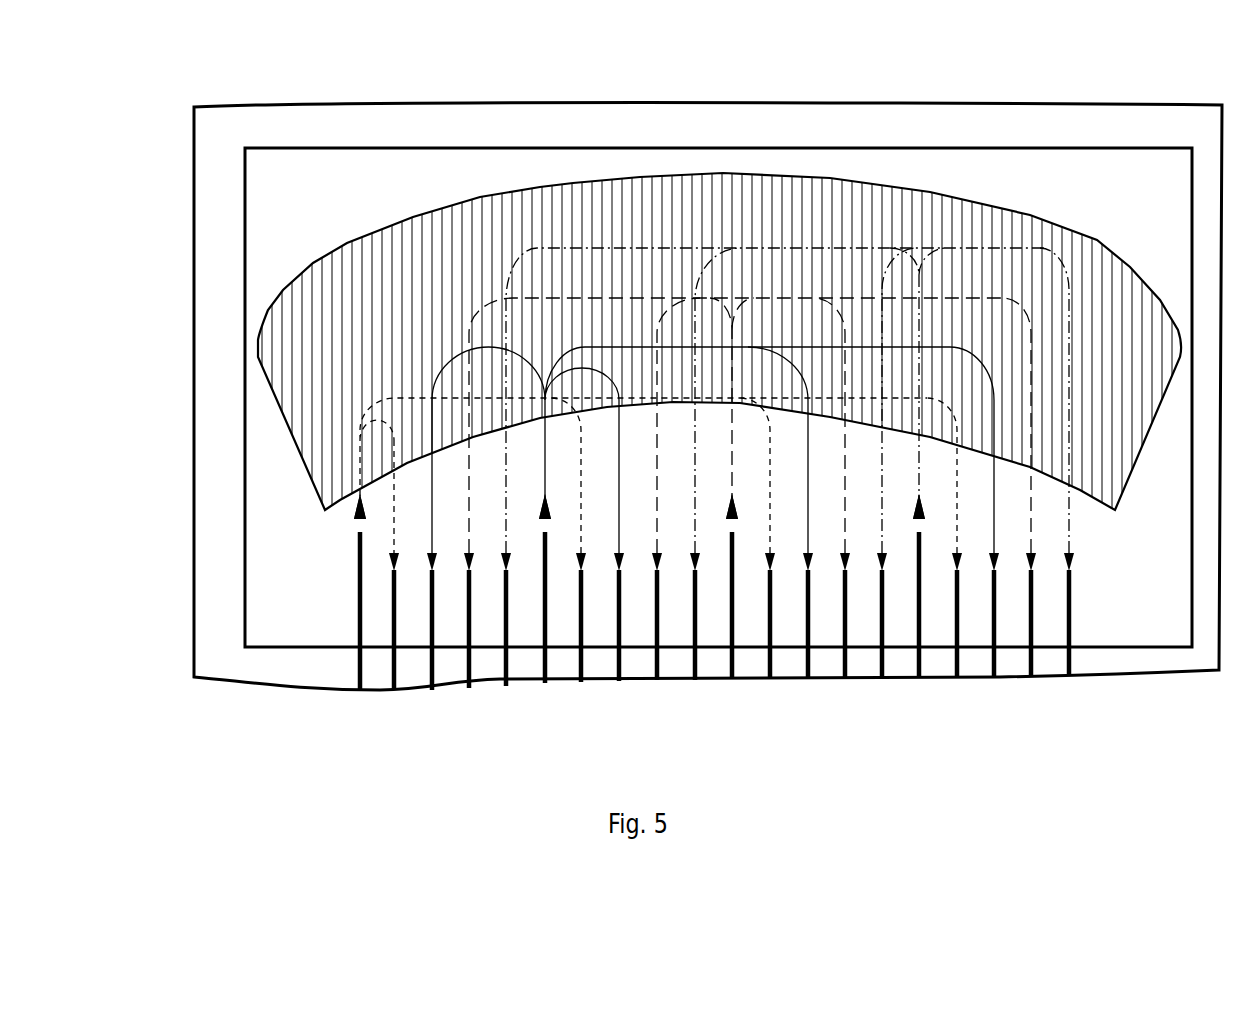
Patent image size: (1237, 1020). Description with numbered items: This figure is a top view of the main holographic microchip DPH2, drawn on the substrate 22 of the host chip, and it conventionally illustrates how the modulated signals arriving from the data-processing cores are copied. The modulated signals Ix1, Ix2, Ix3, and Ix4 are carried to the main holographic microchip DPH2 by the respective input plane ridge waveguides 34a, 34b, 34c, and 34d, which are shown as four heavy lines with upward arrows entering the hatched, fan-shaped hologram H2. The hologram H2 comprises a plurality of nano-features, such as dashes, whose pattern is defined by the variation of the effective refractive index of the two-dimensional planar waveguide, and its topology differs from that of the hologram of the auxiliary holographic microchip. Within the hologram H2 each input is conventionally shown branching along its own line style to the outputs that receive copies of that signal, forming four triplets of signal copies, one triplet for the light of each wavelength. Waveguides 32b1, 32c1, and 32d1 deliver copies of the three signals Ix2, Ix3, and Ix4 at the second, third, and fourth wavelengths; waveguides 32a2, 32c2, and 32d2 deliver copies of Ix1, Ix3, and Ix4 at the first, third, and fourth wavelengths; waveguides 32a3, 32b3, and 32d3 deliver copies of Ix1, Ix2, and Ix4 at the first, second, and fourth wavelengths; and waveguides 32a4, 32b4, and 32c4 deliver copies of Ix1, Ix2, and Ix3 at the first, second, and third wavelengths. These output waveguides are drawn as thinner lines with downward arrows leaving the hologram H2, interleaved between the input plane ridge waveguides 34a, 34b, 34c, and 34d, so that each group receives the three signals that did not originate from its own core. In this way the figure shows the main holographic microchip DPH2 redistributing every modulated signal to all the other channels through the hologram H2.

The substrate 22 is at (227, 133).
The hologram H2 is at (430, 193).
The main holographic microchip DPH2 is at (1070, 129).
The input plane ridge waveguide 34a is at (357, 607).
The input plane ridge waveguide 34b is at (544, 627).
The input plane ridge waveguide 34c is at (731, 625).
The input plane ridge waveguide 34d is at (956, 627).
The modulated signal Ix1 is at (358, 522).
The modulated signal Ix2 is at (547, 522).
The modulated signal Ix3 is at (734, 522).
The modulated signal Ix4 is at (921, 522).
The waveguide 32b1 is at (431, 627).
The waveguide 32c1 is at (468, 648).
The waveguide 32d1 is at (505, 663).
The waveguide 32a2 is at (582, 623).
The waveguide 32c2 is at (658, 623).
The waveguide 32d2 is at (696, 625).
The waveguide 32a3 is at (771, 623).
The waveguide 32b3 is at (879, 627).
The waveguide 32d3 is at (917, 627).
The waveguide 32a4 is at (995, 627).
The waveguide 32b4 is at (1032, 627).
The waveguide 32c4 is at (1070, 627).